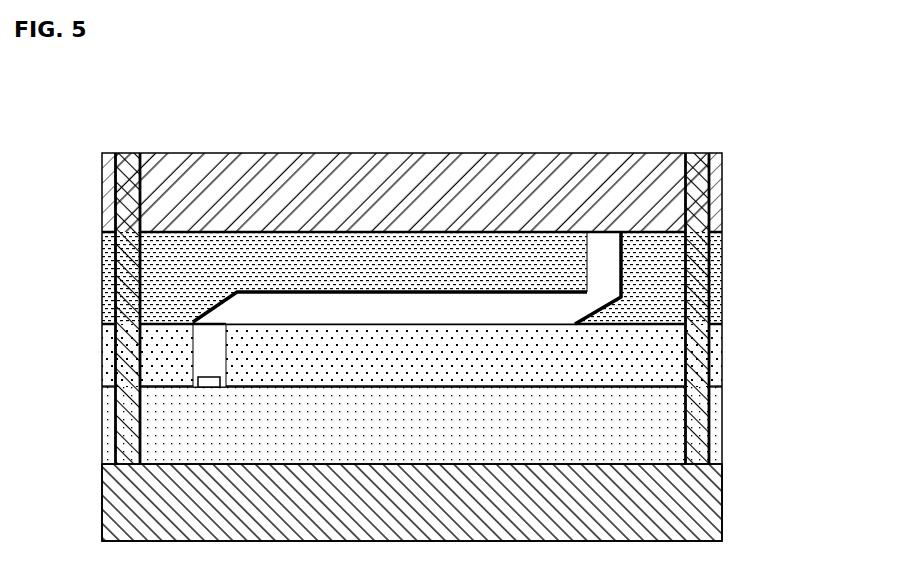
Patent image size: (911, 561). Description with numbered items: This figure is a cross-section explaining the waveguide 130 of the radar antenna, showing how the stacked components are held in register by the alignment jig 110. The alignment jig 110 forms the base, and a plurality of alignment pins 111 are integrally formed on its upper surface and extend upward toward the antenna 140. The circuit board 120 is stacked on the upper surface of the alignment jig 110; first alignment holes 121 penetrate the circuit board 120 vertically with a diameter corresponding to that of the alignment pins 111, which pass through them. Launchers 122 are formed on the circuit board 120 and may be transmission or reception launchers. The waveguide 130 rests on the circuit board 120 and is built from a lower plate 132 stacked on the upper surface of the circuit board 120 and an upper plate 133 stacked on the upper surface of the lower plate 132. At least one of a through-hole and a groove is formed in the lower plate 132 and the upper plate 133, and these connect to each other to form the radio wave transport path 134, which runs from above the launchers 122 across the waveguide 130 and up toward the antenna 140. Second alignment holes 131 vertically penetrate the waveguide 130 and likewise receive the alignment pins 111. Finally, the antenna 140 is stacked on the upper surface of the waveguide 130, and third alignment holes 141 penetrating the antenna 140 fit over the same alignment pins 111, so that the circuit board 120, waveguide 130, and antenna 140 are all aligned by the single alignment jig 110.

The alignment jig 110 is at (723, 500).
The alignment pins 111 is at (697, 153).
The circuit board 120 is at (723, 447).
The first alignment holes 121 is at (723, 402).
The launchers 122 is at (208, 377).
The waveguide 130 is at (498, 309).
The second alignment holes 131 is at (723, 254).
The lower plate 132 is at (723, 352).
The upper plate 133 is at (723, 302).
The radio wave transport path 134 is at (415, 292).
The antenna 140 is at (723, 215).
The third alignment holes 141 is at (723, 172).